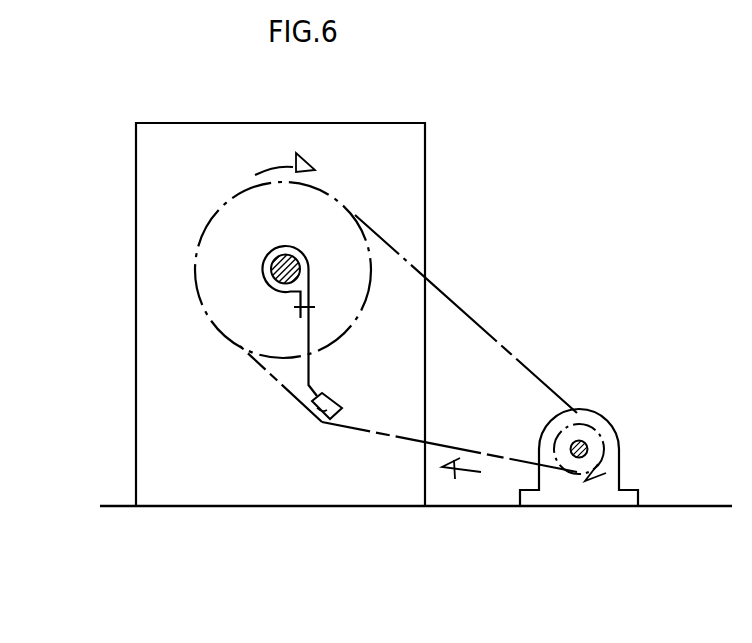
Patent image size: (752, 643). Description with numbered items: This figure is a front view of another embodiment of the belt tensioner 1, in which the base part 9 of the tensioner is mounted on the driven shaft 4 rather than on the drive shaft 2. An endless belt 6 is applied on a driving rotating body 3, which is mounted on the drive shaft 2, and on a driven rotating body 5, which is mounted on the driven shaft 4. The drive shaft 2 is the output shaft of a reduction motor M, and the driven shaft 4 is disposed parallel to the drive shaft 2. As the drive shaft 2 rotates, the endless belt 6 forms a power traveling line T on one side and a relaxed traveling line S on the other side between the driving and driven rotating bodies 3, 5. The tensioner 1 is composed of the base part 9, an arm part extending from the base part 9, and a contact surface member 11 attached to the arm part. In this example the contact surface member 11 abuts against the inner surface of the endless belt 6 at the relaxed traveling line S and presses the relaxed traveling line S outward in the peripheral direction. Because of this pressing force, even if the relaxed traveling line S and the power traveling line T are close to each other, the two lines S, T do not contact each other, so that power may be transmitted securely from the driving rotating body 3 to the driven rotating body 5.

The tensioner 1 is at (279, 340).
The drive shaft 2 is at (580, 441).
The driving rotating body 3 is at (555, 435).
The driven shaft 4 is at (263, 261).
The driven rotating body 5 is at (373, 255).
The endless belt 6 is at (507, 460).
The base part 9 is at (300, 242).
The contact surface member 11 is at (332, 427).
The reduction motor M is at (620, 450).
The relaxed traveling line S is at (398, 438).
The power traveling line T is at (458, 307).